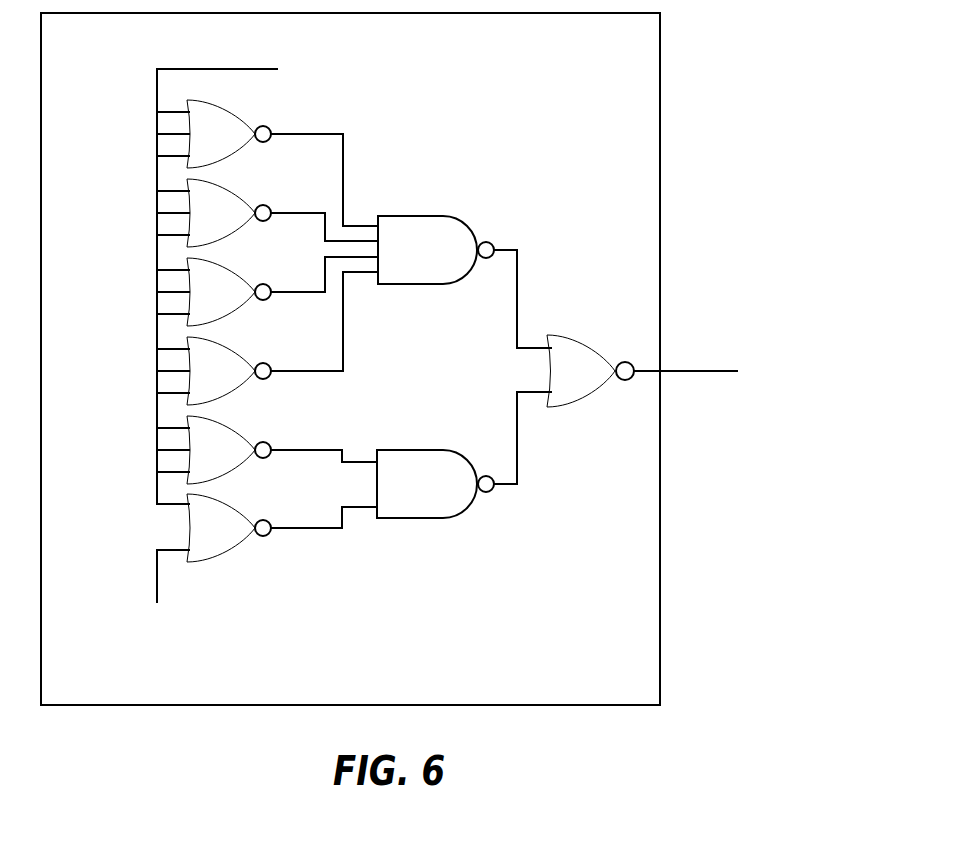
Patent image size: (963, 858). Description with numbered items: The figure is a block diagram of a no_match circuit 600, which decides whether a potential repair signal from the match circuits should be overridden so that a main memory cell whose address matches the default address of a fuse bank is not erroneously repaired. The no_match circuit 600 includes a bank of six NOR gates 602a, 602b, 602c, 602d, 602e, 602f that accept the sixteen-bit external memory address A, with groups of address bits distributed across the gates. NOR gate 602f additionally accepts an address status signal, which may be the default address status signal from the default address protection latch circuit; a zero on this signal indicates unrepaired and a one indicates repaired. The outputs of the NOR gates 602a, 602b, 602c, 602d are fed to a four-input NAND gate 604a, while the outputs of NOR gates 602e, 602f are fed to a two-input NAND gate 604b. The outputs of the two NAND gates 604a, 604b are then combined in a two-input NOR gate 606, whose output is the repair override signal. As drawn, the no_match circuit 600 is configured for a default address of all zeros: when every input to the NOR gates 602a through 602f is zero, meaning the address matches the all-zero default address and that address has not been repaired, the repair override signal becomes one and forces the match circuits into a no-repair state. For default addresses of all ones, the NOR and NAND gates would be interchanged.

The no_match circuit 600 is at (643, 690).
The NOR gate 602a is at (238, 141).
The NOR gate 602b is at (238, 220).
The NOR gate 602c is at (238, 299).
The NOR gate 602d is at (238, 378).
The NOR gate 602e is at (238, 457).
The NOR gate 602f is at (236, 535).
The 4-input NAND gate 604a is at (458, 262).
The 2-input NAND gate 604b is at (455, 497).
The 2-input NOR gate 606 is at (597, 380).